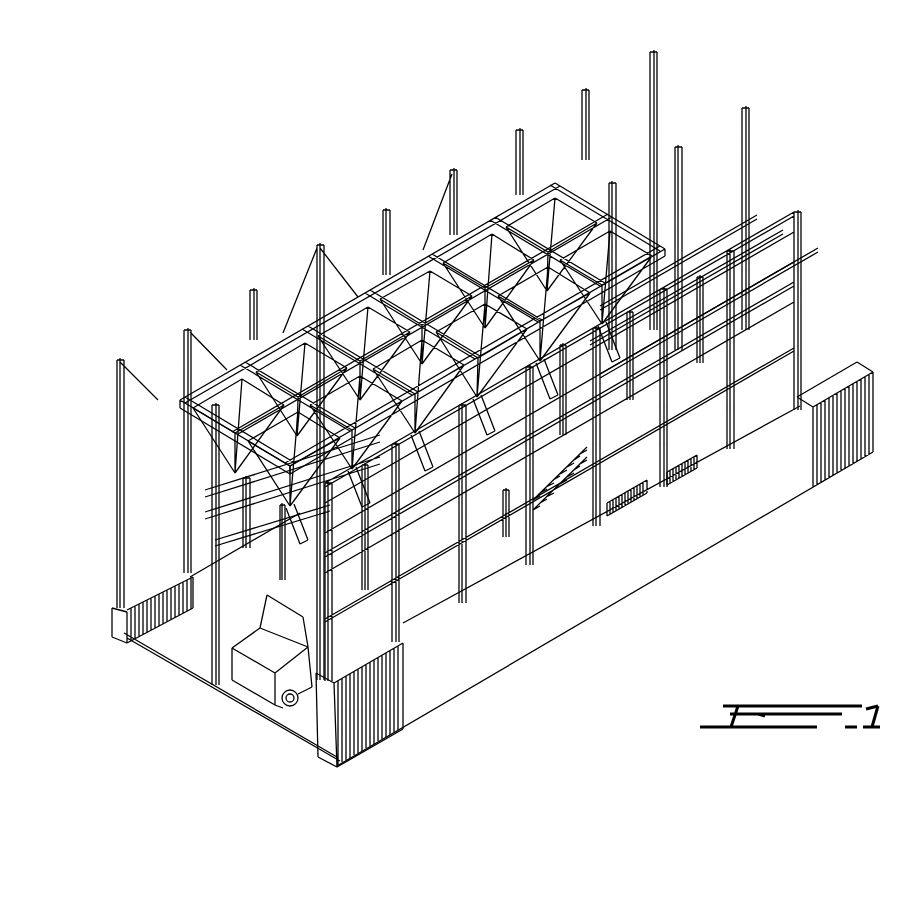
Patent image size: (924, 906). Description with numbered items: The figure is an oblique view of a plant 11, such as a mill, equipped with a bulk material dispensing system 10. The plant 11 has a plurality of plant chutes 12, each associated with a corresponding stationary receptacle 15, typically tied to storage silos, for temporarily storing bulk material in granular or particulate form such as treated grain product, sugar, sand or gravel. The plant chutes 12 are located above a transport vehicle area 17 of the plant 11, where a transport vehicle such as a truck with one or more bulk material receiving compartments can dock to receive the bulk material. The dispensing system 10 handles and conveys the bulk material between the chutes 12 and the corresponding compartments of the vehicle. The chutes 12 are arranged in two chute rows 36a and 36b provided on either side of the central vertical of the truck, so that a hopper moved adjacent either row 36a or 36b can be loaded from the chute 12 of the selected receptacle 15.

The bulk material dispensing system 10 is at (402, 552).
The plant 11 is at (822, 187).
The plant chutes 12 is at (497, 418).
The stationary receptacles 15 is at (362, 307).
The transport vehicle area 17 is at (313, 653).
The chute row 36a is at (223, 407).
The chute row 36b is at (283, 442).